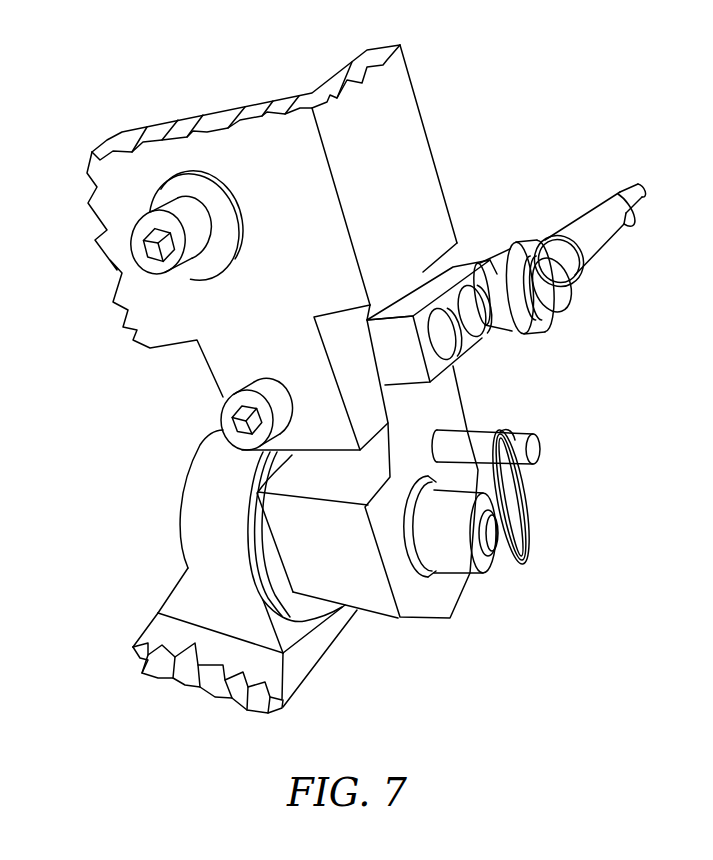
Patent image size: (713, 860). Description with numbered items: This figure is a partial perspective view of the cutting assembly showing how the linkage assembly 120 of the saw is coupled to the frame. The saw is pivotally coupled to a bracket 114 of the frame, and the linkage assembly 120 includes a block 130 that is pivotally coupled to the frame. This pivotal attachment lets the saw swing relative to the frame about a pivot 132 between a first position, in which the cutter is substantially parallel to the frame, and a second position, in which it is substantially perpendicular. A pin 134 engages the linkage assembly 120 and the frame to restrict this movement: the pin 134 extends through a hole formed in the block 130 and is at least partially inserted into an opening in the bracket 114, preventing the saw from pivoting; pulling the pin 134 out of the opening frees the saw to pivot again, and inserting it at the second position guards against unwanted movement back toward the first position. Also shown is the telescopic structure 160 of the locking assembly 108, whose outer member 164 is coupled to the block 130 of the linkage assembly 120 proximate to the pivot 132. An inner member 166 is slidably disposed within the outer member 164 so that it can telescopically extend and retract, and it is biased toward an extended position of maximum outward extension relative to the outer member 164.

The locking assembly 108 is at (597, 253).
The bracket 114 is at (203, 483).
The linkage assembly 120 is at (176, 294).
The block 130 is at (432, 402).
The pivot 132 is at (486, 538).
The pin 134 is at (481, 428).
The telescopic structure 160 is at (577, 232).
The outer member 164 is at (583, 218).
The inner member 166 is at (625, 190).